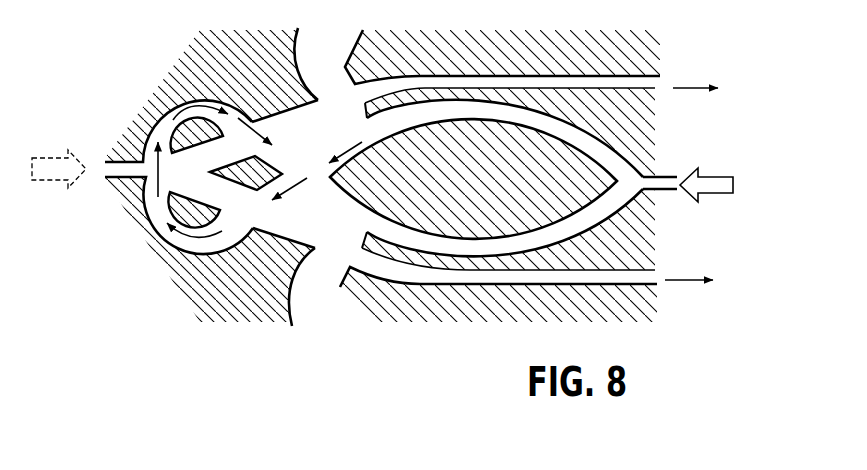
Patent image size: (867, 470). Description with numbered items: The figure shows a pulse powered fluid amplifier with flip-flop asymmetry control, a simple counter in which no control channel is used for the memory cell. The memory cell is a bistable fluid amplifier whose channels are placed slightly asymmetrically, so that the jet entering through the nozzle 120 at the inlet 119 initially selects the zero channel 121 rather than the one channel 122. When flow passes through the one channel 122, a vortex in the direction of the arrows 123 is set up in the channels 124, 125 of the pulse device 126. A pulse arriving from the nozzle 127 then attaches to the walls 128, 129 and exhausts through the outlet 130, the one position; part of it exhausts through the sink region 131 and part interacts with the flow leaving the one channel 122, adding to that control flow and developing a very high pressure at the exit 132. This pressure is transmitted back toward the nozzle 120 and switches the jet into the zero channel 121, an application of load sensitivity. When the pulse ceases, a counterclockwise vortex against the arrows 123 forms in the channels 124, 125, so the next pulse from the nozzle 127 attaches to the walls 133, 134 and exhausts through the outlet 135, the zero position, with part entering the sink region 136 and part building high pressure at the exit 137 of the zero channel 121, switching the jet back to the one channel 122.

The fluid inlet 119 is at (644, 162).
The nozzle 120 is at (645, 189).
The zero channel 121 is at (600, 205).
The one channel 122 is at (600, 150).
The arrows 123 is at (159, 166).
The channel 124 is at (190, 240).
The channel 125 is at (193, 100).
The pulse device 126 is at (152, 112).
The nozzle 127 is at (142, 168).
The wall 128 is at (212, 138).
The wall 129 is at (293, 110).
The outlet 130 is at (660, 82).
The sink region 131 is at (339, 55).
The exit 132 is at (386, 127).
The wall 133 is at (197, 198).
The wall 134 is at (290, 238).
The outlet 135 is at (657, 285).
The sink region 136 is at (332, 314).
The exit 137 is at (380, 225).